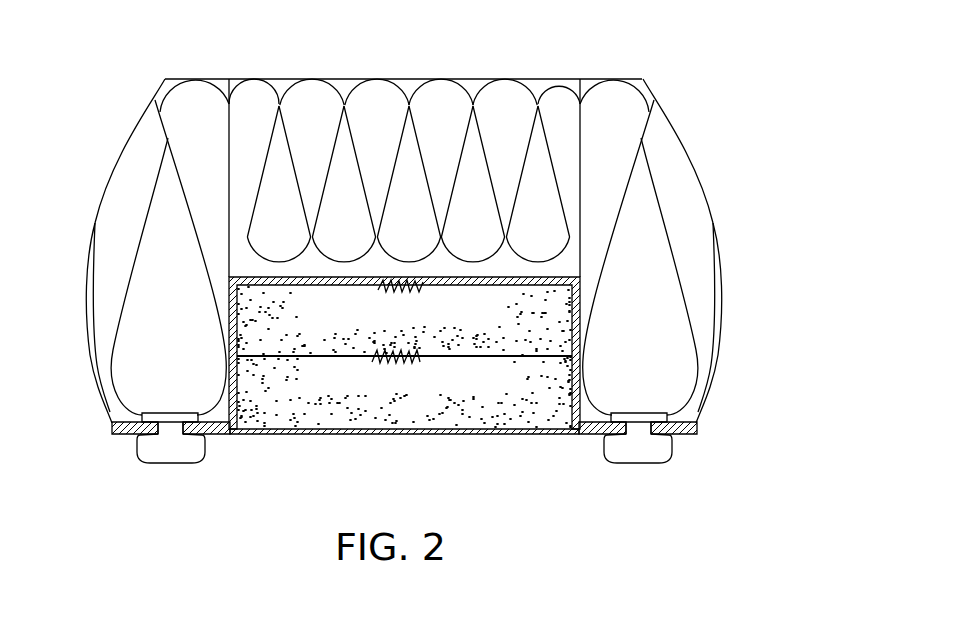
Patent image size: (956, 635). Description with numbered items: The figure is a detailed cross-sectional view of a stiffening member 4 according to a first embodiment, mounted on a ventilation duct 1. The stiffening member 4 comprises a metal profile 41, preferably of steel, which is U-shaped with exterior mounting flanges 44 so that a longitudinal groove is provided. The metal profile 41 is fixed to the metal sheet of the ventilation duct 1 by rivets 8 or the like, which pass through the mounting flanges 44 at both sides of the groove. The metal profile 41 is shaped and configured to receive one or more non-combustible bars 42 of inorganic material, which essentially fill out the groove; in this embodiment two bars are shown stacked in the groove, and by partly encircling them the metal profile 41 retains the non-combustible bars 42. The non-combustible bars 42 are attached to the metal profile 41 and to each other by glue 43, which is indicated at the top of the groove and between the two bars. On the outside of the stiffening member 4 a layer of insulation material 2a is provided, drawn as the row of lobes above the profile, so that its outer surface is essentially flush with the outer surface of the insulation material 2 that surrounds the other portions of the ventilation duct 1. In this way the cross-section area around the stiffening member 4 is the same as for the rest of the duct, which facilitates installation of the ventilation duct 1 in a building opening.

The ventilation duct 1 is at (514, 440).
The insulation material 2 is at (667, 163).
The layer of insulation material 2a is at (518, 118).
The stiffening member 4 is at (380, 166).
The metal profile 41 is at (578, 297).
The non-combustible bars 42 is at (283, 343).
The glue 43 is at (422, 301).
The exterior mounting flanges 44 is at (115, 435).
The rivets 8 is at (174, 449).